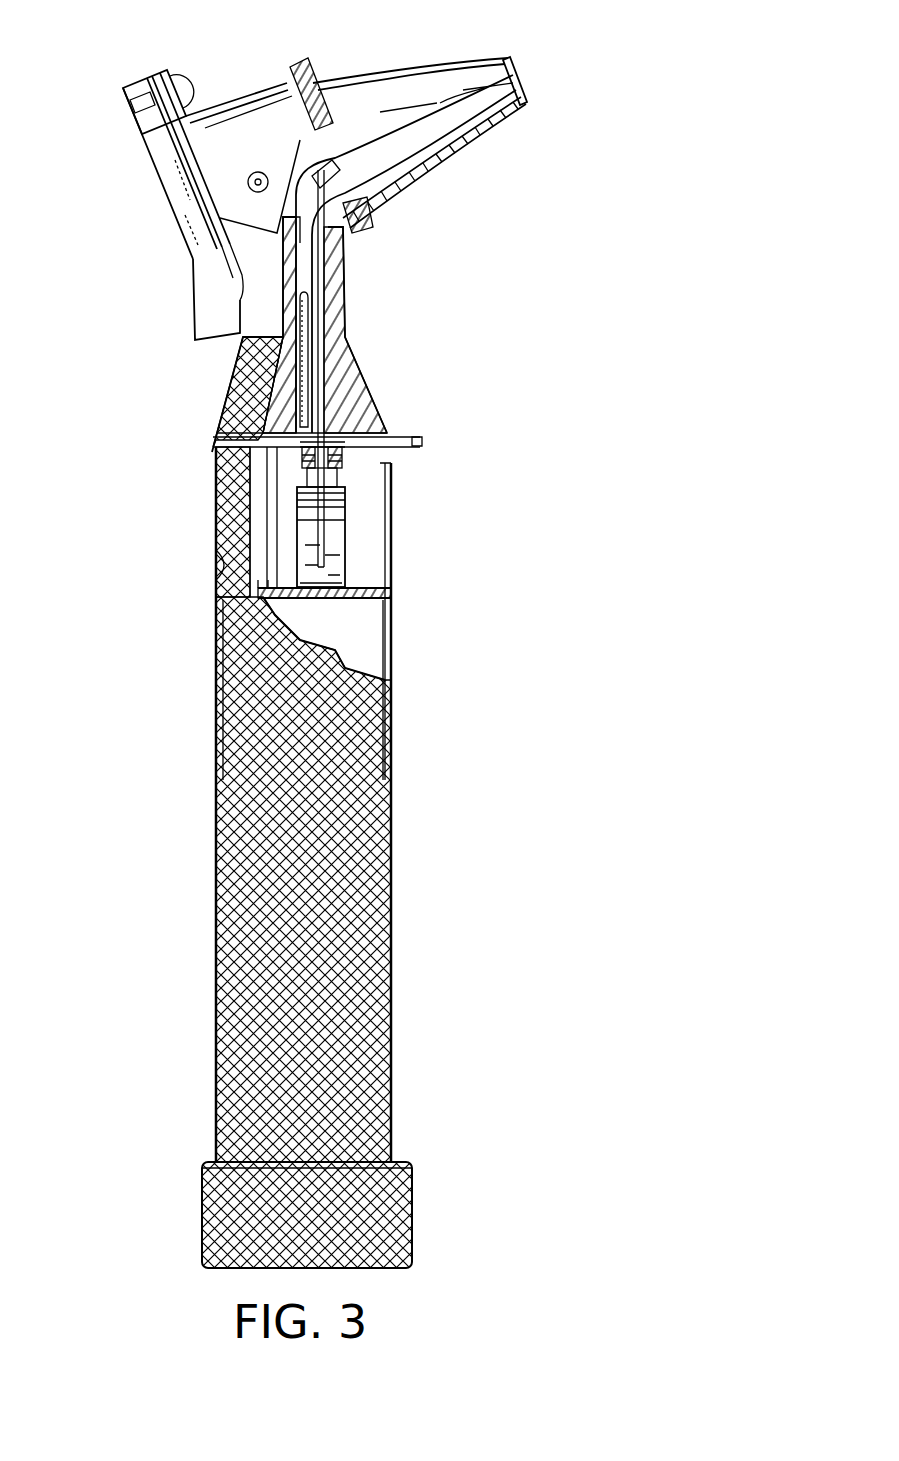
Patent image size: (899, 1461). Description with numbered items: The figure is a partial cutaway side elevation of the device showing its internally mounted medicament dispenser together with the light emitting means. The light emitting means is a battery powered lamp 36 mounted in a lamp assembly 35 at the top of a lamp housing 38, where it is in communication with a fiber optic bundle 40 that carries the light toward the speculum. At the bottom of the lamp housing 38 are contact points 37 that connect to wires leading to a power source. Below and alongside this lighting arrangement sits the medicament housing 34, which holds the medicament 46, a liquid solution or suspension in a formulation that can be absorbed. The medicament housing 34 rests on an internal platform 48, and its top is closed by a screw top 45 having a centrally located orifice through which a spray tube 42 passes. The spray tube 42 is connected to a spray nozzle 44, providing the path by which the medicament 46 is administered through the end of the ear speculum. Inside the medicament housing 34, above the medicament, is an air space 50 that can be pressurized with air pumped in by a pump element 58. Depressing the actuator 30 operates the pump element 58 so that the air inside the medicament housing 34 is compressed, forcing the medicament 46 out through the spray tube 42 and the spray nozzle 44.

The actuator 30 is at (420, 440).
The medicament housing 34 is at (297, 535).
The lamp assembly 35 is at (327, 300).
The lamp 36 is at (243, 312).
The contact points 37 is at (263, 334).
The lamp housing 38 is at (297, 358).
The fiber optic bundle 40 is at (295, 210).
The spray tube 42 is at (447, 137).
The spray nozzle 44 is at (518, 82).
The screw top 45 is at (297, 500).
The medicament 46 is at (343, 553).
The internal platform 48 is at (367, 597).
The air space 50 is at (343, 523).
The pump element 58 is at (343, 455).